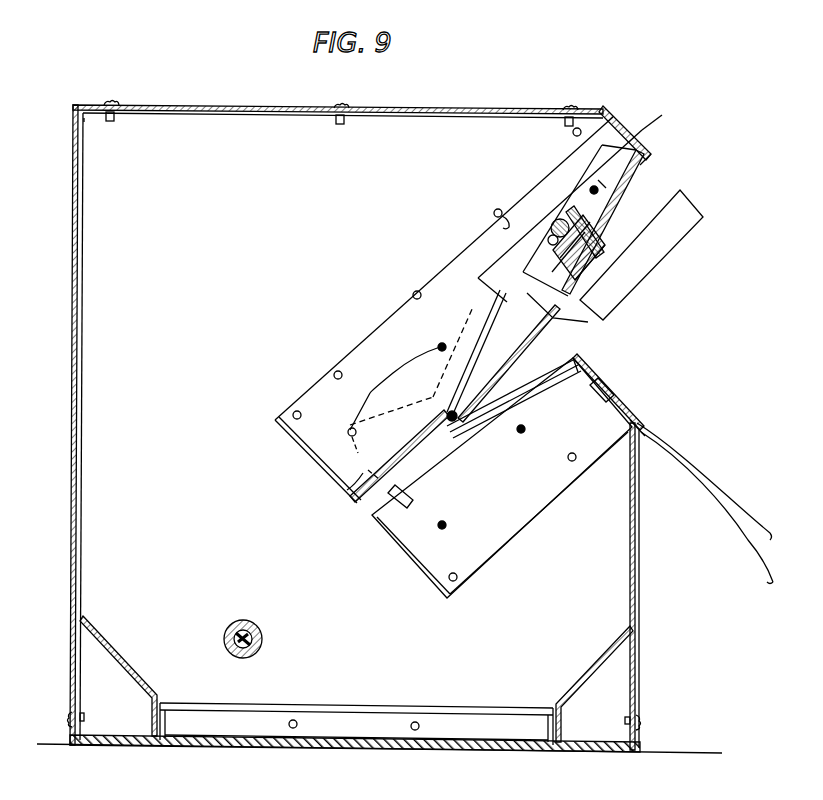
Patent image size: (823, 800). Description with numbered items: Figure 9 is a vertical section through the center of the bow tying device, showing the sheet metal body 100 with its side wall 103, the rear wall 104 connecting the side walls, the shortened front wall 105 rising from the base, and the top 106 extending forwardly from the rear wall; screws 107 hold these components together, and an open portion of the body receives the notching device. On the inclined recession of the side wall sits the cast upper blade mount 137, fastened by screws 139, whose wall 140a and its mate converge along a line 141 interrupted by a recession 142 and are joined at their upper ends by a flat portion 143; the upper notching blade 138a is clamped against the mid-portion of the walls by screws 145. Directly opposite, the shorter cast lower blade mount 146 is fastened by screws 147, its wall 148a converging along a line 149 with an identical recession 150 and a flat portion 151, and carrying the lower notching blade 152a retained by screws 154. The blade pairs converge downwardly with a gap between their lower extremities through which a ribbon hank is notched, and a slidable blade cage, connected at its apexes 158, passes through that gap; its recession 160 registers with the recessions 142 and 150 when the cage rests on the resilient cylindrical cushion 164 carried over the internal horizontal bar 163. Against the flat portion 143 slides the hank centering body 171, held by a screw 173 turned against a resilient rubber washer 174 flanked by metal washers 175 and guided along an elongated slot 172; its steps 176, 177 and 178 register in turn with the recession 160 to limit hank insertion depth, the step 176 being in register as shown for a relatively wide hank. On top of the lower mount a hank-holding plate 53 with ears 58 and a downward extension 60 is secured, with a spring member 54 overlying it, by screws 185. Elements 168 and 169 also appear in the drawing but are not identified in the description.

The assembled body 100 is at (642, 578).
The side wall 103 is at (212, 285).
The rear wall 104 is at (73, 412).
The front wall 105 is at (671, 586).
The top 106 is at (247, 105).
The screws 107 is at (105, 100).
The upper blade mount 137 is at (610, 172).
The notching blade 138a is at (470, 344).
The screws 139 is at (573, 131).
The wall 140a is at (460, 268).
The line of convergence 141 is at (404, 398).
The recession 142 is at (407, 424).
The flat portion 143 is at (617, 188).
The screws 145 is at (591, 186).
The lower blade mount 146 is at (588, 370).
The screws 147 is at (568, 460).
The wall 148a is at (502, 478).
The line of convergence 149 is at (374, 517).
The recession 150 is at (412, 493).
The flat portion 151 is at (568, 362).
The notching blade 152a is at (507, 392).
The screws 154 is at (521, 433).
The apexes 158 is at (670, 224).
The recession 160 is at (583, 323).
The internal horizontal bar 163 is at (263, 638).
The resilient cylindrical cushion 164 is at (240, 622).
The bracket plate 168 is at (671, 117).
The corner bracket 169 is at (613, 122).
The hank centering body 171 is at (590, 262).
The elongated slot 172 is at (598, 212).
The screw 173 is at (560, 214).
The resilient rubber washer 174 is at (572, 210).
The metal washers 175 is at (555, 234).
The step 176 is at (552, 272).
The step 177 is at (580, 279).
The step 178 is at (582, 248).
The screws 185 is at (613, 390).
The plate 53 is at (632, 412).
The spring member 54 is at (622, 418).
The ears 58 is at (670, 478).
The extension 60 is at (770, 584).